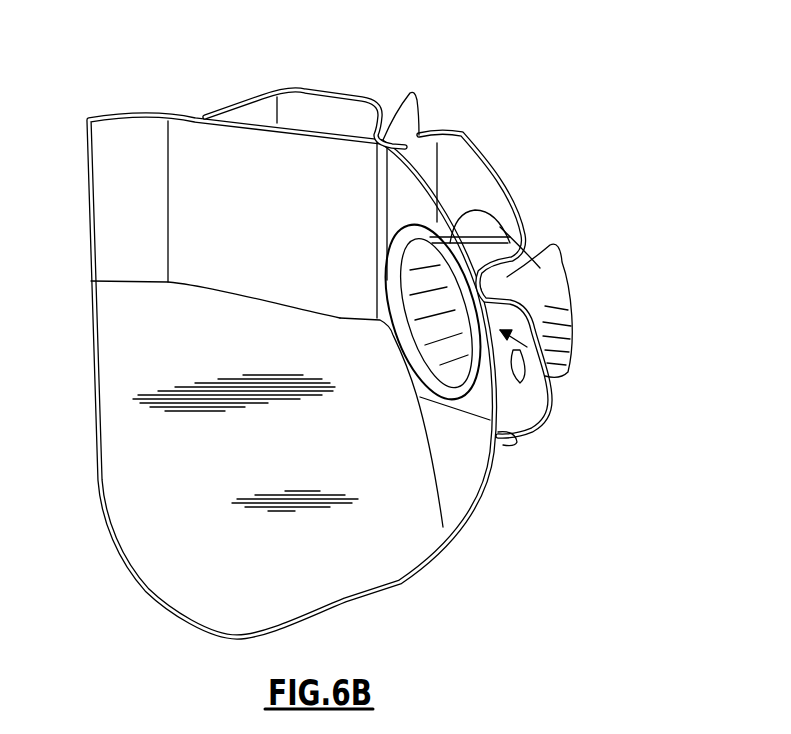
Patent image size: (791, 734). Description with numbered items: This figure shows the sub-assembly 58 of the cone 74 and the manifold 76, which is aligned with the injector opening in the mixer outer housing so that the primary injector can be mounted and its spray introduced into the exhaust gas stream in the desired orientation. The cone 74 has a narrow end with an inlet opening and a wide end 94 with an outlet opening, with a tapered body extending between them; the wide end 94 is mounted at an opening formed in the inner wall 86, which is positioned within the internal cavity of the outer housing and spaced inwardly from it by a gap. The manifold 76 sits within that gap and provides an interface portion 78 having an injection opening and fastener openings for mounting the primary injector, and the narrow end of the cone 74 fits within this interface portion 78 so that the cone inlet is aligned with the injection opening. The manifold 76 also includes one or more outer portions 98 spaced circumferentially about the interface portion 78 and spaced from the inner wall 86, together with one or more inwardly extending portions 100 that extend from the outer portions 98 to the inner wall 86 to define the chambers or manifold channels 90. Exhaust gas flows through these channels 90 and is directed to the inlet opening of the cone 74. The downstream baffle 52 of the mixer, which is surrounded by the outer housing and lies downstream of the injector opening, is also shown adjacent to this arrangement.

The downstream baffle 52 is at (338, 568).
The sub-assembly 58 is at (603, 93).
The cone 74 is at (550, 372).
The manifold 76 is at (550, 298).
The interface portion 78 is at (530, 237).
The inner wall 86 is at (138, 143).
The manifold channels 90 is at (290, 110).
The wide end 94 is at (470, 378).
The outer portions 98 is at (323, 97).
The inwardly extending portions 100 is at (412, 102).